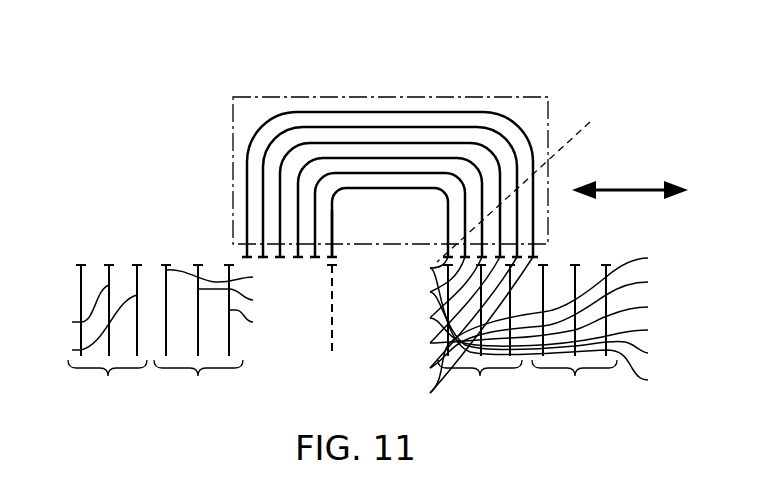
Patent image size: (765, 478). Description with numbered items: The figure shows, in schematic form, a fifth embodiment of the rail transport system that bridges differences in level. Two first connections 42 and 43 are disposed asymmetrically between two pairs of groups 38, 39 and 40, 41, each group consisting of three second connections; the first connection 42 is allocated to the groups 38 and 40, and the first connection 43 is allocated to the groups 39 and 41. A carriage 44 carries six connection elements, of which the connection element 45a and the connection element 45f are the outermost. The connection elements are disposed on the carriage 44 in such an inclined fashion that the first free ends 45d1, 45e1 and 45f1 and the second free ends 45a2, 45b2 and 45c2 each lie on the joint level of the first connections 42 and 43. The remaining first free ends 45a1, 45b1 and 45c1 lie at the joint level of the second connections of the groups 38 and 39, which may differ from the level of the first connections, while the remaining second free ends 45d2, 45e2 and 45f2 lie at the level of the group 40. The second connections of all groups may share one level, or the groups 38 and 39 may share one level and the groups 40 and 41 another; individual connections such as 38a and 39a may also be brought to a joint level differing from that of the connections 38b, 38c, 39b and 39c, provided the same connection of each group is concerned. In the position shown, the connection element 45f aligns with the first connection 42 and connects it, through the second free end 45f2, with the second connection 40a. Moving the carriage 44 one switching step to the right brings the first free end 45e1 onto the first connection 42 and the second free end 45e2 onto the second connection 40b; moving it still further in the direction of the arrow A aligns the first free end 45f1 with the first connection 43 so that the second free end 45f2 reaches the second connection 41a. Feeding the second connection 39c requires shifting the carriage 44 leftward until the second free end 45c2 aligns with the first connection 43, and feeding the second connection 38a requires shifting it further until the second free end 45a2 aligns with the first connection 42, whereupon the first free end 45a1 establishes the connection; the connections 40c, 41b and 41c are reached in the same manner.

The group of second connections 38 is at (107, 335).
The second connection 38a is at (81, 277).
The second connection 38b is at (72, 311).
The second connection 38c is at (86, 329).
The group of second connections 39 is at (198, 335).
The second connection 39a is at (231, 278).
The second connection 39b is at (247, 300).
The second connection 39c is at (262, 323).
The group of second connections 40 is at (480, 335).
The second connection 40a is at (560, 319).
The second connection 40b is at (561, 319).
The second connection 40c is at (560, 319).
The group of second connections 41 is at (574, 335).
The second connection 41a is at (560, 332).
The second connection 41b is at (561, 329).
The second connection 41c is at (560, 330).
The first connection 42 is at (330, 355).
The first connection 43 is at (525, 181).
The carriage 44 is at (530, 100).
The connection element 45a is at (245, 163).
The first free end 45a1 is at (264, 165).
The first free end 45b1 is at (279, 168).
The first free end 45c1 is at (298, 170).
The first free end 45d1 is at (316, 182).
The first free end 45e1 is at (332, 196).
The connection element 45f is at (333, 225).
The first free end 45f1 is at (332, 248).
The second free end 45a2 is at (455, 333).
The second free end 45b2 is at (447, 320).
The second free end 45c2 is at (438, 308).
The second free end 45d2 is at (429, 295).
The second free end 45e2 is at (421, 282).
The second free end 45f2 is at (412, 270).
The arrow A is at (630, 182).